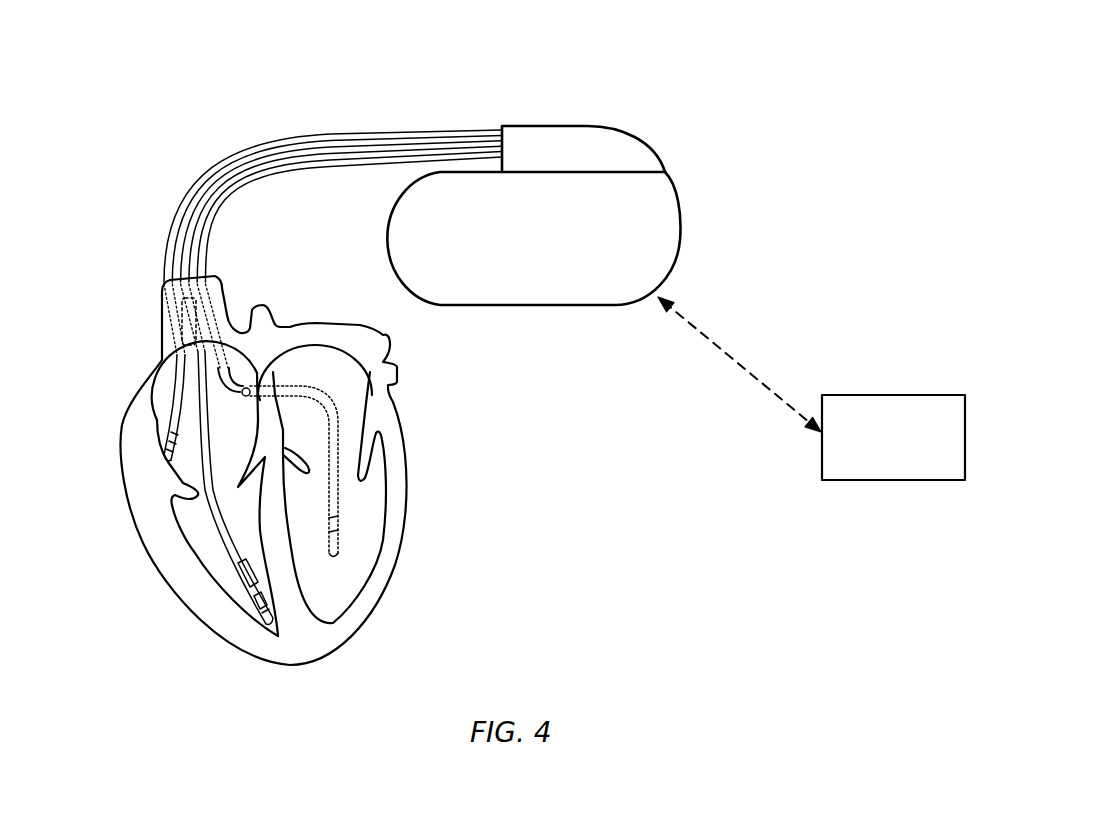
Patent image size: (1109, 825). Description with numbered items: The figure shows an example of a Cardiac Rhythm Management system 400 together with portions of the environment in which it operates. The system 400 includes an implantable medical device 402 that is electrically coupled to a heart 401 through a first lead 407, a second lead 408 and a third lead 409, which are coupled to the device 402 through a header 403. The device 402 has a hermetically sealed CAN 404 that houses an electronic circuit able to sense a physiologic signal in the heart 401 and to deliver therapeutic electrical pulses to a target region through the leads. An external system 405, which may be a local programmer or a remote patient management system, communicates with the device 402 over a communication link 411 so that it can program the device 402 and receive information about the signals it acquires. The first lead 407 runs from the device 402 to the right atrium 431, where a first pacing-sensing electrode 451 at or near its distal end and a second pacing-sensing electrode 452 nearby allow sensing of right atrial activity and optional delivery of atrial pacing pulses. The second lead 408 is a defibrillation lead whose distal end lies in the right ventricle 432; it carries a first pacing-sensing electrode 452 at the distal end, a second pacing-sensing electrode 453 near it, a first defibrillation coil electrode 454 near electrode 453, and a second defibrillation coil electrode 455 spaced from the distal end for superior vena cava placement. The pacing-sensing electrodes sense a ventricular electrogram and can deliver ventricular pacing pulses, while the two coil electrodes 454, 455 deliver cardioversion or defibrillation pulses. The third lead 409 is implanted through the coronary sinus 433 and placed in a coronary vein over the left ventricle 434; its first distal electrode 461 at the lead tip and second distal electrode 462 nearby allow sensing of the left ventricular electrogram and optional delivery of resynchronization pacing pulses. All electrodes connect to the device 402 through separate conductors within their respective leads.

The Cardiac Rhythm Management system 400 is at (837, 57).
The heart 401 is at (413, 507).
The implantable medical device 402 is at (638, 120).
The header 403 is at (664, 158).
The hermetically sealed CAN 404 is at (680, 233).
The external system 405 is at (920, 395).
The first lead 407 is at (250, 137).
The second lead 408 is at (333, 143).
The third lead 409 is at (407, 152).
The communication link 411 is at (713, 337).
The right atrium 431 is at (177, 407).
The right ventricle 432 is at (198, 520).
The coronary sinus 433 is at (246, 377).
The left ventricle 434 is at (333, 606).
The first pacing-sensing electrode 451 is at (165, 456).
The second pacing-sensing electrode 452 is at (173, 437).
The second pacing-sensing electrode 453 is at (260, 603).
The first defibrillation coil electrode 454 is at (243, 575).
The second defibrillation coil electrode 455 is at (197, 327).
The first distal electrode 461 is at (338, 559).
The second distal electrode 462 is at (338, 530).